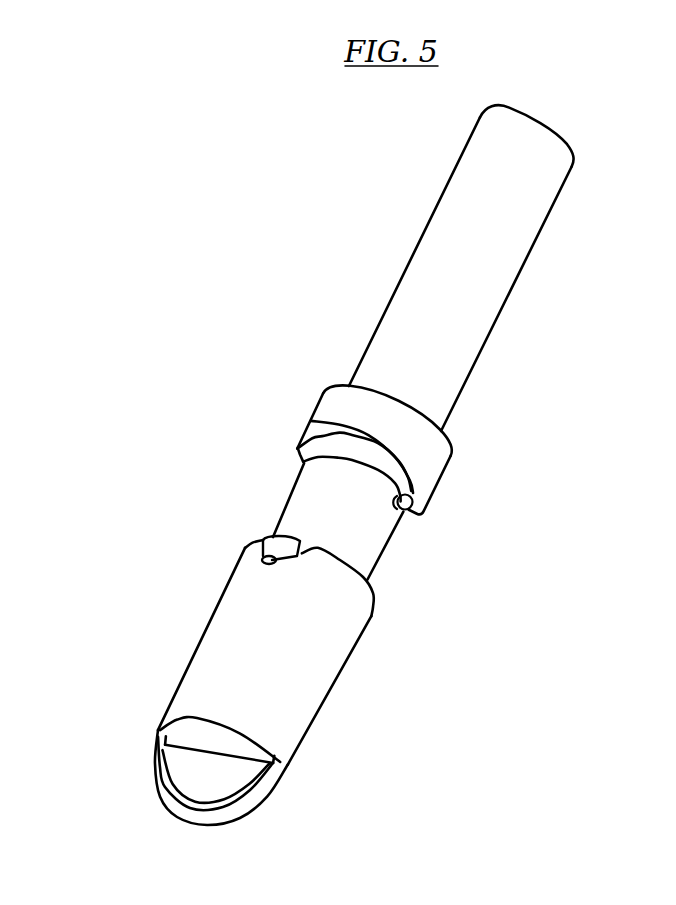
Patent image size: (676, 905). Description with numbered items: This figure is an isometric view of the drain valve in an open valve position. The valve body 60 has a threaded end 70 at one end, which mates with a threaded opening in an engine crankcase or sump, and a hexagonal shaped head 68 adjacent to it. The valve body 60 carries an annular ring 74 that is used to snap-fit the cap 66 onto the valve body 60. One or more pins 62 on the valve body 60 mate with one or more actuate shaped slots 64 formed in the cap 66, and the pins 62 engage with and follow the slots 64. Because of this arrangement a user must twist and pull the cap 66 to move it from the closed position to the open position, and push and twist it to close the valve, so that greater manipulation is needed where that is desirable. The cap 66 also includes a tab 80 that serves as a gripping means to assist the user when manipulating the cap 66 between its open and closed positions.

The valve body 60 is at (455, 388).
The pin 62 is at (413, 501).
The actuate shaped slot 64 is at (266, 538).
The cap 66 is at (203, 670).
The hexagonal shaped head 68 is at (318, 402).
The threaded end 70 is at (537, 211).
The annular ring 74 is at (305, 455).
The tab 80 is at (175, 773).